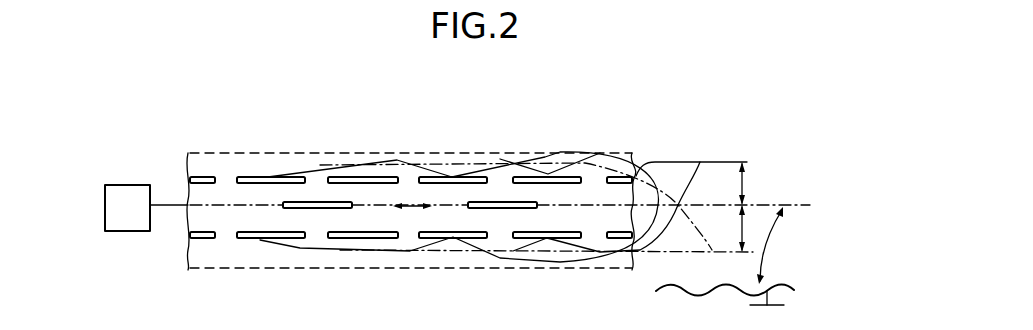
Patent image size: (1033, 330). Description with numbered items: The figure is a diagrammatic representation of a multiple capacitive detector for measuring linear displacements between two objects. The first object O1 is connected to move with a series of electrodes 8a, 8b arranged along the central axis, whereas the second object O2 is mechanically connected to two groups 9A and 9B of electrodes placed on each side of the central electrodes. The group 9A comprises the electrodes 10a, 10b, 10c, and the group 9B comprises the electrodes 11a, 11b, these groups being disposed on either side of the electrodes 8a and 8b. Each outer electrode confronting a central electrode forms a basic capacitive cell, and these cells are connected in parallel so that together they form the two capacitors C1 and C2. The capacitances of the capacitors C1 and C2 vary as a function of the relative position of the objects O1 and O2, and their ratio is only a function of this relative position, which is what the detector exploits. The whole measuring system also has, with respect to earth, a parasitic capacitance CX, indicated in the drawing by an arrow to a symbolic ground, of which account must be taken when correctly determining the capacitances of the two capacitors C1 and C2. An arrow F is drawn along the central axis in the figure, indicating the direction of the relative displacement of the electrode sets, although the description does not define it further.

The first object O1 is at (121, 235).
The second object O2 is at (206, 257).
The first group of electrodes 9A is at (188, 235).
The second group of electrodes 9B is at (188, 180).
The electrode 10a is at (265, 282).
The electrode 8a is at (318, 202).
The electrode 11a is at (337, 282).
The electrode 10b is at (443, 177).
The electrode 8b is at (505, 202).
The electrode 11b is at (547, 177).
The electrode 10c is at (628, 177).
The focal distance F is at (410, 207).
The first capacitor C1 is at (691, 183).
The second capacitor C2 is at (721, 228).
The parasitic capacitance CX is at (735, 256).